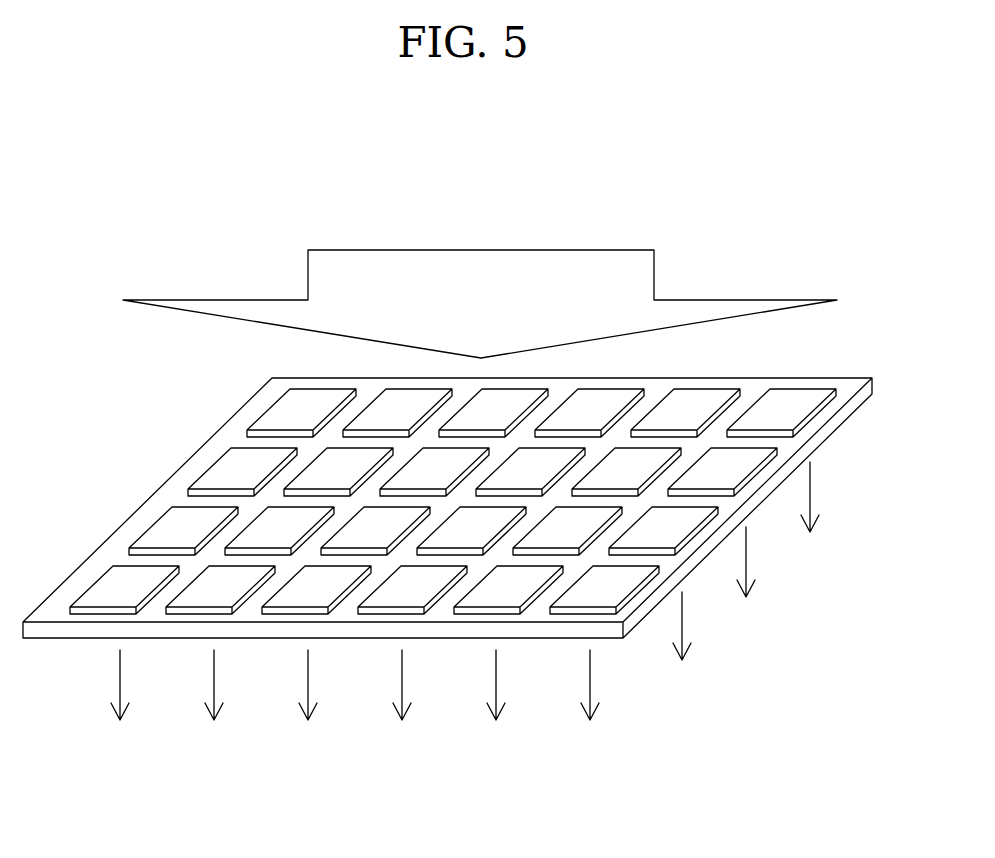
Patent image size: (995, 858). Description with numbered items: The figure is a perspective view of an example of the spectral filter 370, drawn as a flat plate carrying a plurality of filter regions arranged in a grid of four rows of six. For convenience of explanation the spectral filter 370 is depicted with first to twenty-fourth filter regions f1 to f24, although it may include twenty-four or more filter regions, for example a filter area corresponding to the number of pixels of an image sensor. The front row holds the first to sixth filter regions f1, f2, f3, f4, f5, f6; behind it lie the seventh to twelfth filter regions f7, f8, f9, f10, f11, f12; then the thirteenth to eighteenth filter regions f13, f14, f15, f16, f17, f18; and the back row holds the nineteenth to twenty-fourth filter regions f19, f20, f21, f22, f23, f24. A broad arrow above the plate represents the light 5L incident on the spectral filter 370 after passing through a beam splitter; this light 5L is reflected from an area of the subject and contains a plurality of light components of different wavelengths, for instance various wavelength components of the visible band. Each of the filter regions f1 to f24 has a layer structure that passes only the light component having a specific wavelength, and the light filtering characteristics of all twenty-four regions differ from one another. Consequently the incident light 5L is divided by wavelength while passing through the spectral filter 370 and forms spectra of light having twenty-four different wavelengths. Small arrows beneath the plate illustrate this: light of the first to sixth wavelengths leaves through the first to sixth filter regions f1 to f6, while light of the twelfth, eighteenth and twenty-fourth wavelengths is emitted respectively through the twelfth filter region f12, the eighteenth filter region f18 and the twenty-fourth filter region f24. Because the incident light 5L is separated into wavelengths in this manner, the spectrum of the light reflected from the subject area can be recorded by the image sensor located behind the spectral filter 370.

The light 5L is at (597, 250).
The spectral filter 370 is at (802, 377).
The first filter region f1 is at (112, 600).
The second filter region f2 is at (208, 600).
The third filter region f3 is at (304, 600).
The fourth filter region f4 is at (400, 600).
The fifth filter region f5 is at (496, 600).
The sixth filter region f6 is at (592, 600).
The seventh filter region f7 is at (171, 541).
The eighth filter region f8 is at (267, 541).
The ninth filter region f9 is at (363, 541).
The tenth filter region f10 is at (454, 541).
The eleventh filter region f11 is at (550, 541).
The twelfth filter region f12 is at (646, 541).
The thirteenth filter region f13 is at (225, 482).
The fourteenth filter region f14 is at (321, 482).
The fifteenth filter region f15 is at (417, 482).
The sixteenth filter region f16 is at (513, 482).
The seventeenth filter region f17 is at (609, 482).
The eighteenth filter region f18 is at (705, 482).
The nineteenth filter region f19 is at (284, 423).
The twentieth filter region f20 is at (380, 423).
The twenty-first filter region f21 is at (476, 423).
The twenty-second filter region f22 is at (572, 423).
The twenty-third filter region f23 is at (668, 423).
The twenty-fourth filter region f24 is at (764, 423).